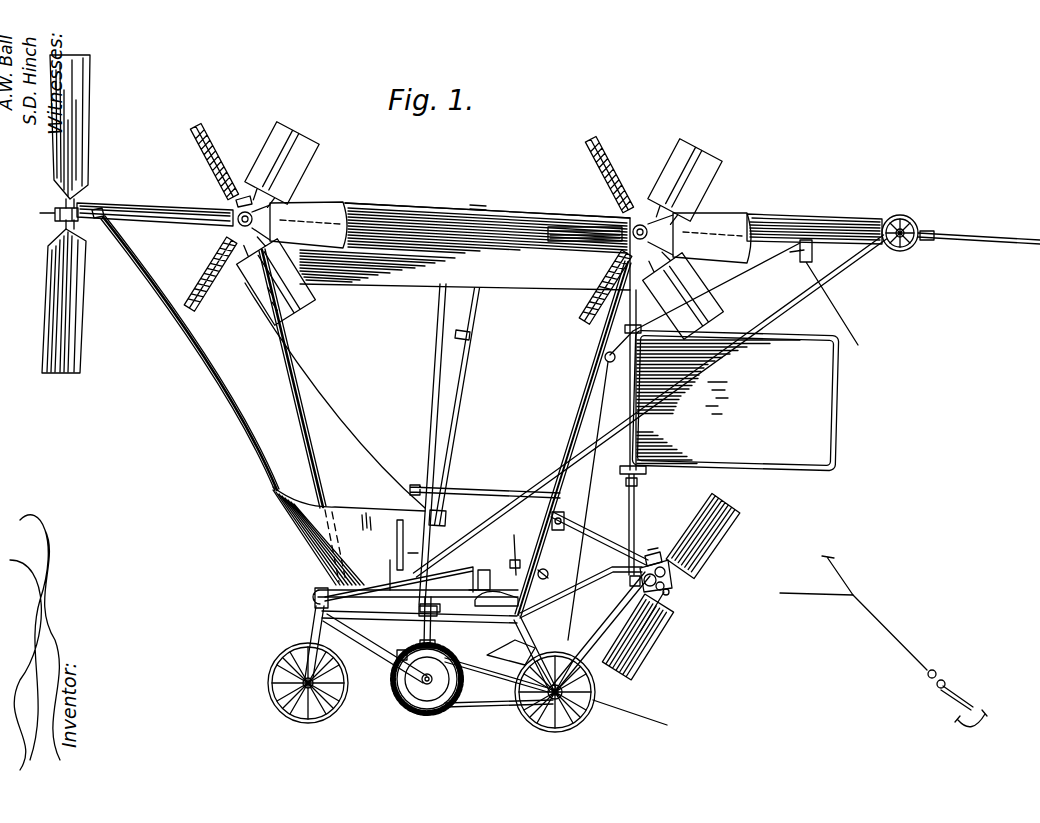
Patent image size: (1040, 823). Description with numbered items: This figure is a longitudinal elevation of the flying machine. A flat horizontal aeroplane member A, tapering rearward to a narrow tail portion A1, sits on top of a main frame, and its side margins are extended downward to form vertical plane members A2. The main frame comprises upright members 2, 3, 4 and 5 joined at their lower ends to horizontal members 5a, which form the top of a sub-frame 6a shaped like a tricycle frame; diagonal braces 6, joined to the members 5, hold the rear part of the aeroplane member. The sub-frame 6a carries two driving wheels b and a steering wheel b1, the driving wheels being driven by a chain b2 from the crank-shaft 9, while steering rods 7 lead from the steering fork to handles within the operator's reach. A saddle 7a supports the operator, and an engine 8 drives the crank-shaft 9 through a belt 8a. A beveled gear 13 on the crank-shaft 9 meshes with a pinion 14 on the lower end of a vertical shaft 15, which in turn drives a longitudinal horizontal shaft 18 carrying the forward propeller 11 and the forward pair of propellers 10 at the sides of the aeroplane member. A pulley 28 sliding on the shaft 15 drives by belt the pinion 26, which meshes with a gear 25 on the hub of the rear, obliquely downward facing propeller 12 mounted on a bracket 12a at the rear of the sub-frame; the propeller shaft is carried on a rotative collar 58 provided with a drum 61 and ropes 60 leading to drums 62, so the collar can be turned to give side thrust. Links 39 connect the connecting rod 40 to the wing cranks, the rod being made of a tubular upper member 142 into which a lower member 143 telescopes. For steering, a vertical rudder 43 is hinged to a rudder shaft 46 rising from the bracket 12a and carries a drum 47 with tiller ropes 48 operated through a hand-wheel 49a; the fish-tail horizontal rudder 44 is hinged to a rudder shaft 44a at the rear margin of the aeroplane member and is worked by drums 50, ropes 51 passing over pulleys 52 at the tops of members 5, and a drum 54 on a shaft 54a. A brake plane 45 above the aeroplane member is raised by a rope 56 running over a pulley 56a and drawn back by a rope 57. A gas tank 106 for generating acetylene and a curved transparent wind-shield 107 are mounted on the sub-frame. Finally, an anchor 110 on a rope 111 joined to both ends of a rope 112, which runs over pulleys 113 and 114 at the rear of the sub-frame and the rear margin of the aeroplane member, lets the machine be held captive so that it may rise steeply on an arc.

The upright frame member 2 is at (205, 380).
The upright frame members 3 is at (288, 390).
The upright frame members 4 is at (435, 380).
The upright frame members 5 is at (578, 388).
The diagonal frame members 6 is at (810, 292).
The steering rods 7 is at (374, 582).
The engine 8 is at (511, 652).
The crank-shaft 9 is at (425, 689).
The propellers 10 is at (313, 112).
The propeller 11 is at (50, 214).
The propeller 12 is at (670, 586).
The beveled driving gear 13 is at (398, 697).
The beveled pinion 14 is at (437, 657).
The vertical rotative shaft 15 is at (441, 603).
The horizontal shaft 18 is at (97, 222).
The beveled gear 25 is at (672, 616).
The beveled driving pinion 26 is at (646, 562).
The pulley 28 is at (455, 487).
The links 39 is at (480, 313).
The connecting rod 40 is at (468, 413).
The vertical rudder 43 is at (778, 424).
The horizontal rudder 44 is at (1038, 236).
The horizontal rudder shaft 44a is at (930, 234).
The brake 45 is at (480, 206).
The rudder shaft 46 is at (630, 410).
The drum 47 is at (622, 476).
The tiller ropes 48 is at (590, 466).
The hand-wheel 49a is at (442, 554).
The drums 50 is at (908, 217).
The ropes 51 is at (800, 215).
The pulleys 52 is at (641, 206).
The drum 54 is at (548, 575).
The shaft 54a is at (512, 565).
The rope 56 is at (422, 201).
The pulley 56a is at (236, 200).
The rope 57 is at (587, 214).
The rotative collar 58 is at (665, 646).
The ropes 60 is at (598, 549).
The drum 61 is at (622, 586).
The drums 62 is at (556, 535).
The gas tank 106 is at (502, 612).
The wind-shield 107 is at (305, 521).
The anchor 110 is at (968, 690).
The rope 111 is at (905, 641).
The rope 112 is at (816, 575).
The pulley 113 is at (565, 727).
The pulley 114 is at (804, 256).
The upper connecting rod member 142 is at (425, 525).
The lower connecting rod member 143 is at (403, 655).
The horizontal frame members 5a is at (415, 605).
The sub-frame 6a is at (375, 648).
The saddle 7a is at (485, 593).
The belt 8a is at (496, 616).
The bracket 12a is at (582, 632).
The aeroplane member A is at (390, 202).
The tail portion A1 is at (850, 224).
The vertical plane members A2 is at (465, 246).
The driving wheels b is at (597, 701).
The steering wheel b1 is at (288, 664).
The chain b2 is at (499, 700).